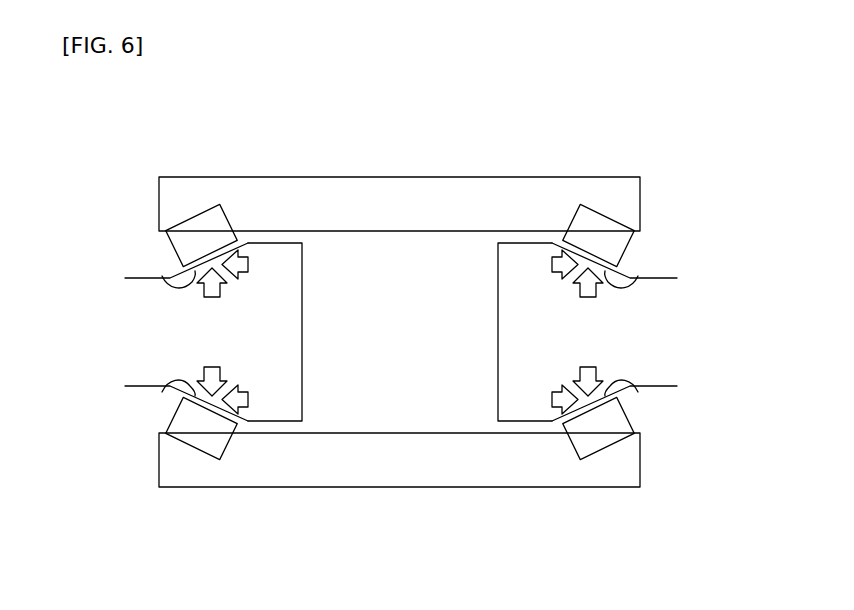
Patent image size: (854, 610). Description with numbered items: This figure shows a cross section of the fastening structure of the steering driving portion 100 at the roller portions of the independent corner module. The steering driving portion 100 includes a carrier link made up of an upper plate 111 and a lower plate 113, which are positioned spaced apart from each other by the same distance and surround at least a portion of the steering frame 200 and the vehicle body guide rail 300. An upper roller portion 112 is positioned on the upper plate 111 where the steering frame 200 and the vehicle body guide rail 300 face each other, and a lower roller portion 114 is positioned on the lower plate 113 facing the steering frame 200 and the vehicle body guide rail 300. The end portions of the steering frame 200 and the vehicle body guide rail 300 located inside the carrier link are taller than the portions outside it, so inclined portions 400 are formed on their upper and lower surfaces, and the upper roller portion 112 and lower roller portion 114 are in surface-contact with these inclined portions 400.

The steering driving portion 100 is at (337, 124).
The upper plate 111 is at (398, 203).
The upper roller portion 112 is at (197, 228).
The lower plate 113 is at (398, 462).
The lower roller portion 114 is at (200, 440).
The steering frame 200 is at (287, 293).
The vehicle body guide rail 300 is at (517, 373).
The inclined portion 400 is at (162, 276).